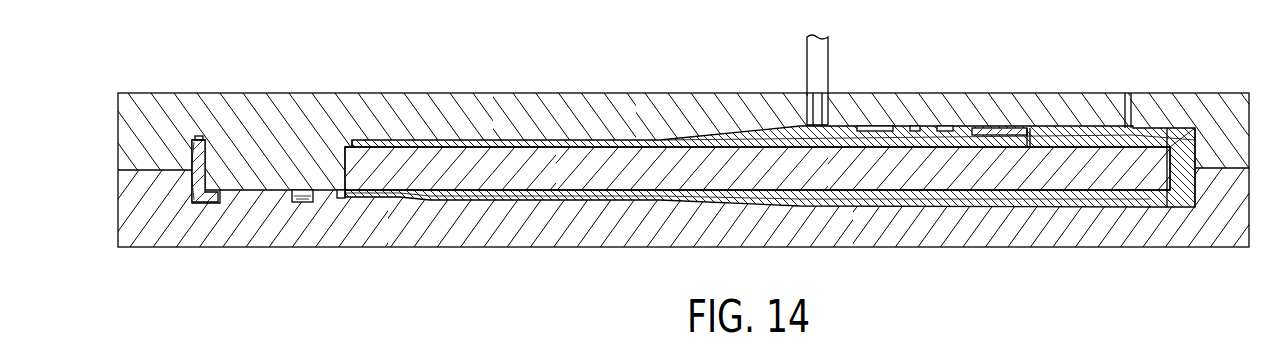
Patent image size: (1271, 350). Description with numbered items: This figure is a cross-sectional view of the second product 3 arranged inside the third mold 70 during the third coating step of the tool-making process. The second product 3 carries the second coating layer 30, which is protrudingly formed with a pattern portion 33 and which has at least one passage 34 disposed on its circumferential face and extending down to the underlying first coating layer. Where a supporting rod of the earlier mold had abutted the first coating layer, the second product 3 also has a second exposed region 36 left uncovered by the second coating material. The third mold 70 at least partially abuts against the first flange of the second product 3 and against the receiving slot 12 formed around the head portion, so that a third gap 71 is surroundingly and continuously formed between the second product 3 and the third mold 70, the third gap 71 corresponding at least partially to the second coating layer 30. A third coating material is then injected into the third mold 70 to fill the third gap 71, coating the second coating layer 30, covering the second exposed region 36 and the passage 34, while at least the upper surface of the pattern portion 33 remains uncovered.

The second product 3 is at (508, 115).
The receiving slot 12 is at (262, 158).
The third mold 70 is at (674, 110).
The pattern portion 33 is at (890, 127).
The third gap 71 is at (958, 128).
The passage 34 is at (1026, 130).
The second exposed region 36 is at (1029, 130).
The second coating layer 30 is at (1088, 130).